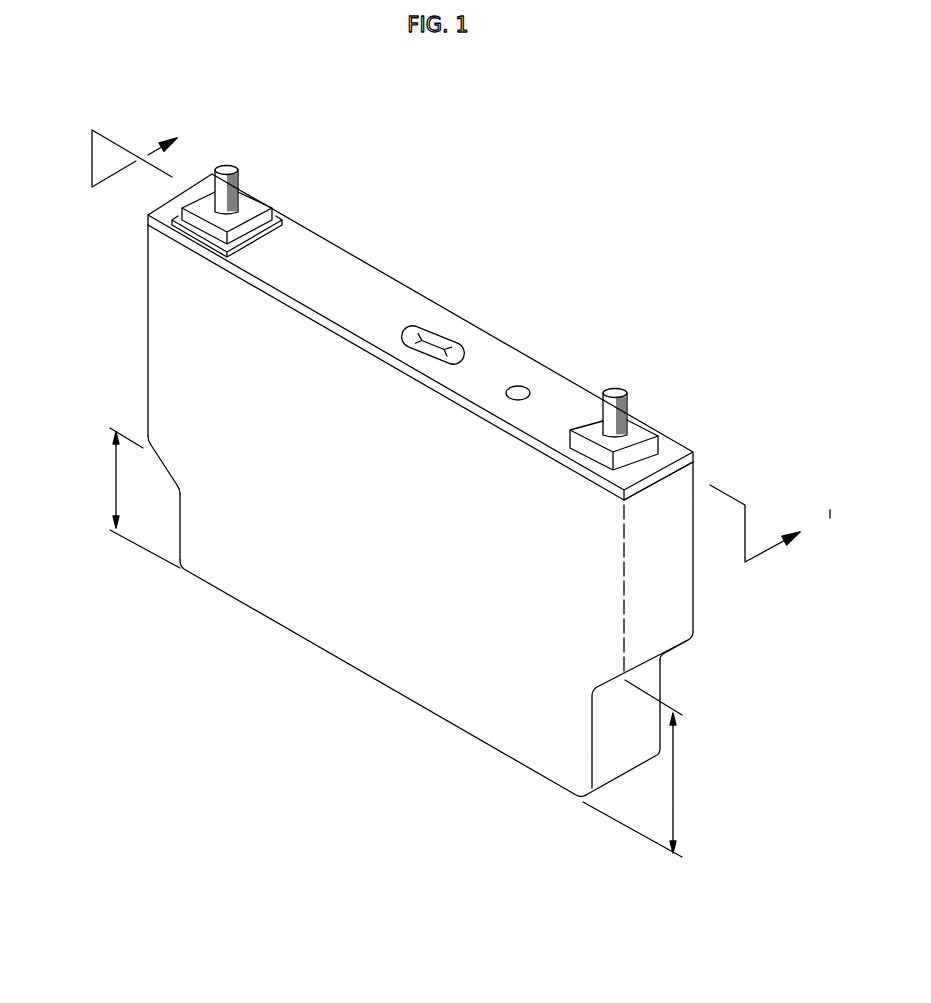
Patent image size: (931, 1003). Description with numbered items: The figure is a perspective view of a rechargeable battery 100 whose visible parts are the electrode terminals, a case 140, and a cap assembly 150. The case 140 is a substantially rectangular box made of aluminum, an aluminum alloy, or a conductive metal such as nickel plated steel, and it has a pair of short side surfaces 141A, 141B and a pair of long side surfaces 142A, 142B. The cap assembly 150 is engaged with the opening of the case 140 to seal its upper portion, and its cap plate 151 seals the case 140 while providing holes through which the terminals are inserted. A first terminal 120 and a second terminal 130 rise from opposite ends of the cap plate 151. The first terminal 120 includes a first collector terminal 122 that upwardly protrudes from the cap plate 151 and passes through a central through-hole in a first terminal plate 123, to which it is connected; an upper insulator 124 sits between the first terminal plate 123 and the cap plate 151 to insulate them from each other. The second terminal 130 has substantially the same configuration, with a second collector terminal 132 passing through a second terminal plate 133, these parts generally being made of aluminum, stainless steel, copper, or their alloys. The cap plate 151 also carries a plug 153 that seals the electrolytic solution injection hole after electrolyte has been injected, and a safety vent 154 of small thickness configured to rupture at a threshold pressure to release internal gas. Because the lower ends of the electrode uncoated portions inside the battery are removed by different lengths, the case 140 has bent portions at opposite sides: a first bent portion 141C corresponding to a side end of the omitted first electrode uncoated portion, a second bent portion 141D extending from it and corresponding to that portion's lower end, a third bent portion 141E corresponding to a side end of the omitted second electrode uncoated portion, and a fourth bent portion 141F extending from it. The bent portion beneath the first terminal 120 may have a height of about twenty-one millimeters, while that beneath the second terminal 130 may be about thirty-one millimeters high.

The battery 100 is at (756, 127).
The first terminal 120 is at (225, 150).
The first collector terminal 122 is at (231, 167).
The first terminal plate 123 is at (250, 200).
The upper insulator 124 is at (274, 216).
The second terminal 130 is at (617, 378).
The second collector terminal 132 is at (620, 393).
The second terminal plate 133 is at (643, 427).
The case 140 is at (365, 686).
The short side surface 141A is at (146, 333).
The short side surface 141B is at (673, 572).
The first bent portion 141C is at (177, 528).
The second bent portion 141D is at (158, 472).
The third bent portion 141E is at (652, 683).
The fourth bent portion 141F is at (650, 663).
The long side surface 142A is at (297, 618).
The long side surface 142B is at (697, 466).
The cap assembly 150 is at (398, 177).
The cap plate 151 is at (342, 266).
The plug 153 is at (518, 390).
The safety vent 154 is at (433, 328).